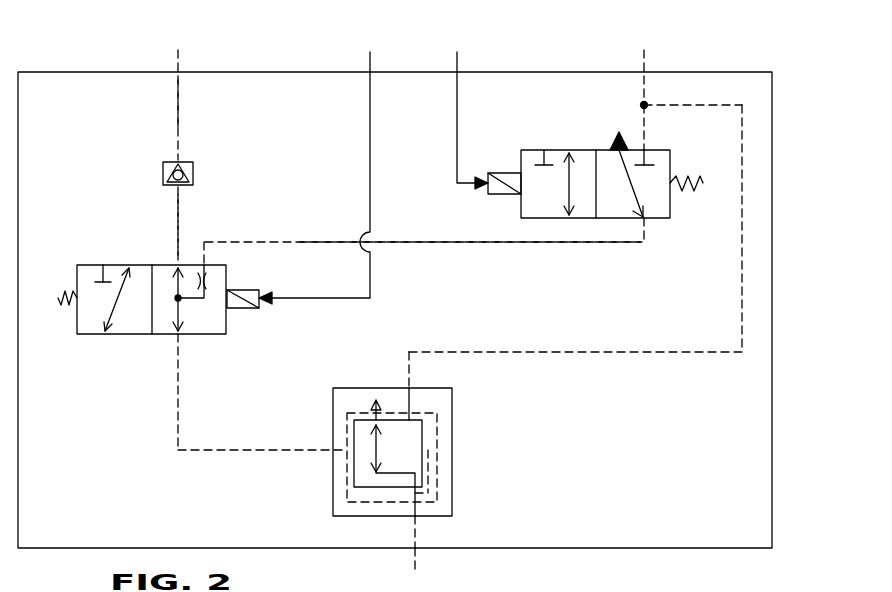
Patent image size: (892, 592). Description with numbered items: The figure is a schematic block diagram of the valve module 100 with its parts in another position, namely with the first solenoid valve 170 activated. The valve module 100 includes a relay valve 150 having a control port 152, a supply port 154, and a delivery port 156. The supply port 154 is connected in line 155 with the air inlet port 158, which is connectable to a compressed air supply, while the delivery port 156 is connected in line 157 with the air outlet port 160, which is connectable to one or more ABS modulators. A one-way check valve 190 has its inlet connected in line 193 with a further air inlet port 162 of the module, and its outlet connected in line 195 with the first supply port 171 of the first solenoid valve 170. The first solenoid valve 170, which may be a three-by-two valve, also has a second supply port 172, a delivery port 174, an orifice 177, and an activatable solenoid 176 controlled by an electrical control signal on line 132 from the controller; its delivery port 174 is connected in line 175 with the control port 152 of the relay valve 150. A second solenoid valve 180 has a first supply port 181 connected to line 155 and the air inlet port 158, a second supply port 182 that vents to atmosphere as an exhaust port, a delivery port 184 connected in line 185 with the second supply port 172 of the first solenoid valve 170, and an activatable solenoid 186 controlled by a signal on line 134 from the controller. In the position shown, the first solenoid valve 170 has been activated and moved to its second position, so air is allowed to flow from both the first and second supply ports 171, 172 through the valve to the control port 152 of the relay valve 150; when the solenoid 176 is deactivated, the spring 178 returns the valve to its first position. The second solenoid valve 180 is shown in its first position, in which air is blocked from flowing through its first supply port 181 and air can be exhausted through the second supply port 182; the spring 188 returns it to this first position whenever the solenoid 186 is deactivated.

The valve module 100 is at (742, 57).
The line 132 is at (369, 68).
The line 134 is at (457, 63).
The relay valve 150 is at (452, 452).
The control port 152 is at (333, 451).
The supply port 154 is at (411, 388).
The line 155 is at (650, 84).
The delivery port 156 is at (413, 516).
The line 157 is at (418, 534).
The air inlet port 158 is at (646, 70).
The air outlet port 160 is at (417, 549).
The air inlet port 162 is at (178, 71).
The first solenoid valve 170 is at (90, 265).
The first supply port 171 is at (178, 267).
The second supply port 172 is at (207, 264).
The delivery port 174 is at (178, 334).
The line 175 is at (180, 396).
The activatable solenoid 176 is at (258, 310).
The orifice 177 is at (207, 282).
The spring 178 is at (60, 305).
The second solenoid valve 180 is at (531, 150).
The first supply port 181 is at (646, 150).
The second supply port 182 is at (614, 140).
The delivery port 184 is at (644, 220).
The line 185 is at (490, 243).
The activatable solenoid 186 is at (503, 173).
The spring 188 is at (690, 196).
The one-way check valve 190 is at (163, 172).
The line 193 is at (178, 114).
The line 195 is at (178, 214).